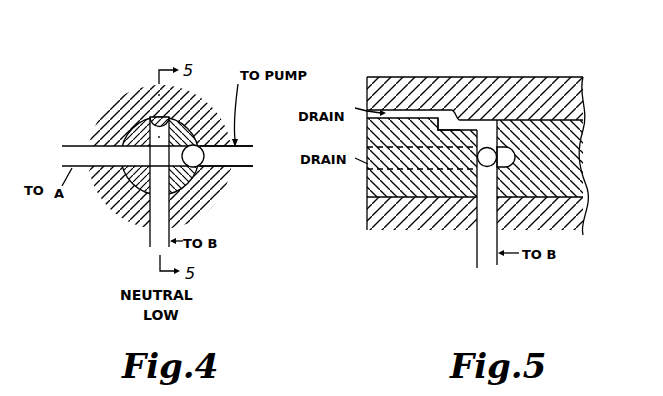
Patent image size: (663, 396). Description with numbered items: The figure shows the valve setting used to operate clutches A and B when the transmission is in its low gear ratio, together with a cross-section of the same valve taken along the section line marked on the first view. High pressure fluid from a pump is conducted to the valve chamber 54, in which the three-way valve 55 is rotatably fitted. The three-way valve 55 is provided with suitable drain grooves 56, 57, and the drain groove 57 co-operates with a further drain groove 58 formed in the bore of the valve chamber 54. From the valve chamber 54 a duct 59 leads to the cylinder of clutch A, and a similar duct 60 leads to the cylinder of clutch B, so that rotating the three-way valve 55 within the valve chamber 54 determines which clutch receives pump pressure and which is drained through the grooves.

In FIG. 4, the valve chamber 54 is at (117, 113).
In FIG. 5, the valve chamber 54 is at (560, 94).
In FIG. 4, the 3-way valve 55 is at (130, 192).
In FIG. 5, the 3-way valve 55 is at (415, 188).
In FIG. 4, the drain groove 56 is at (210, 180).
In FIG. 5, the drain groove 56 is at (365, 172).
In FIG. 4, the drain groove 57 is at (182, 121).
In FIG. 5, the drain groove 57 is at (463, 127).
In FIG. 4, the drain groove 58 is at (156, 114).
In FIG. 5, the drain groove 58 is at (403, 109).
In FIG. 4, the duct 59 is at (73, 151).
In FIG. 4, the duct 60 is at (153, 226).
In FIG. 5, the duct 60 is at (487, 250).